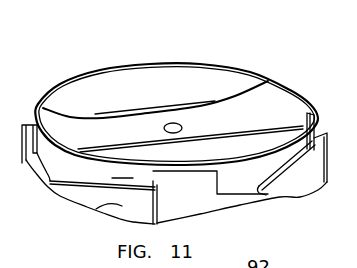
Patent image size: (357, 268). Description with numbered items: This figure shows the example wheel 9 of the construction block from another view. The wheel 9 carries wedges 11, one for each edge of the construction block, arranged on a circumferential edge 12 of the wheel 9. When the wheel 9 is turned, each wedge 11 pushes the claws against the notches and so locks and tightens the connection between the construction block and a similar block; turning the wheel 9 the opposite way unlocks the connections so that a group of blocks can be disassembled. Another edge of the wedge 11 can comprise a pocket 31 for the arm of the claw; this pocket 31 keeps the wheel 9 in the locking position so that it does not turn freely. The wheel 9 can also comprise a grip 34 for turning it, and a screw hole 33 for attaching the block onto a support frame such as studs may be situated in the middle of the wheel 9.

The wheel 9 is at (235, 80).
The wedge 11 is at (100, 207).
The circumferential edge 12 is at (101, 71).
The pocket 31 is at (128, 177).
The screw hole 33 is at (173, 123).
The grip 34 is at (80, 125).